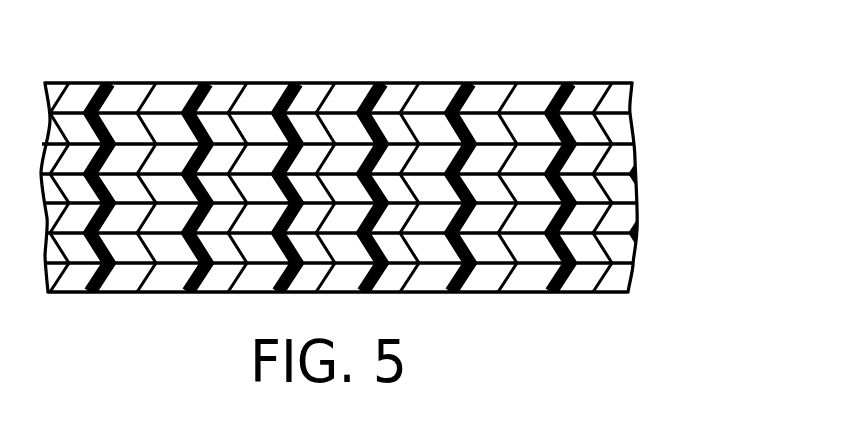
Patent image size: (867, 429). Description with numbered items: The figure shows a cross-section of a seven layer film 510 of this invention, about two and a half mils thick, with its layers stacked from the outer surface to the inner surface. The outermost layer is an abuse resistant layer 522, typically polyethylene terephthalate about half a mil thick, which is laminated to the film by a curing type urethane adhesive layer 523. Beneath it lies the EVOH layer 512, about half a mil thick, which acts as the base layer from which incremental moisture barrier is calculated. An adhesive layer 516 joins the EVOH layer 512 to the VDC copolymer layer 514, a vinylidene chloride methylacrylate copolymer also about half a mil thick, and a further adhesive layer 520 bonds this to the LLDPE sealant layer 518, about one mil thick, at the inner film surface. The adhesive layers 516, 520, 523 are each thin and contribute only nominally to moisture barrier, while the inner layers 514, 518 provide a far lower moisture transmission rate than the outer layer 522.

The seven layer film 510 is at (358, 75).
The abuse resistant layer 522 is at (632, 93).
The adhesive layer 523 is at (631, 122).
The EVOH layer 512 is at (635, 156).
The adhesive layer 516 is at (636, 185).
The VDC copolymer layer 514 is at (637, 217).
The adhesive layer 520 is at (633, 242).
The sealant layer 518 is at (630, 270).